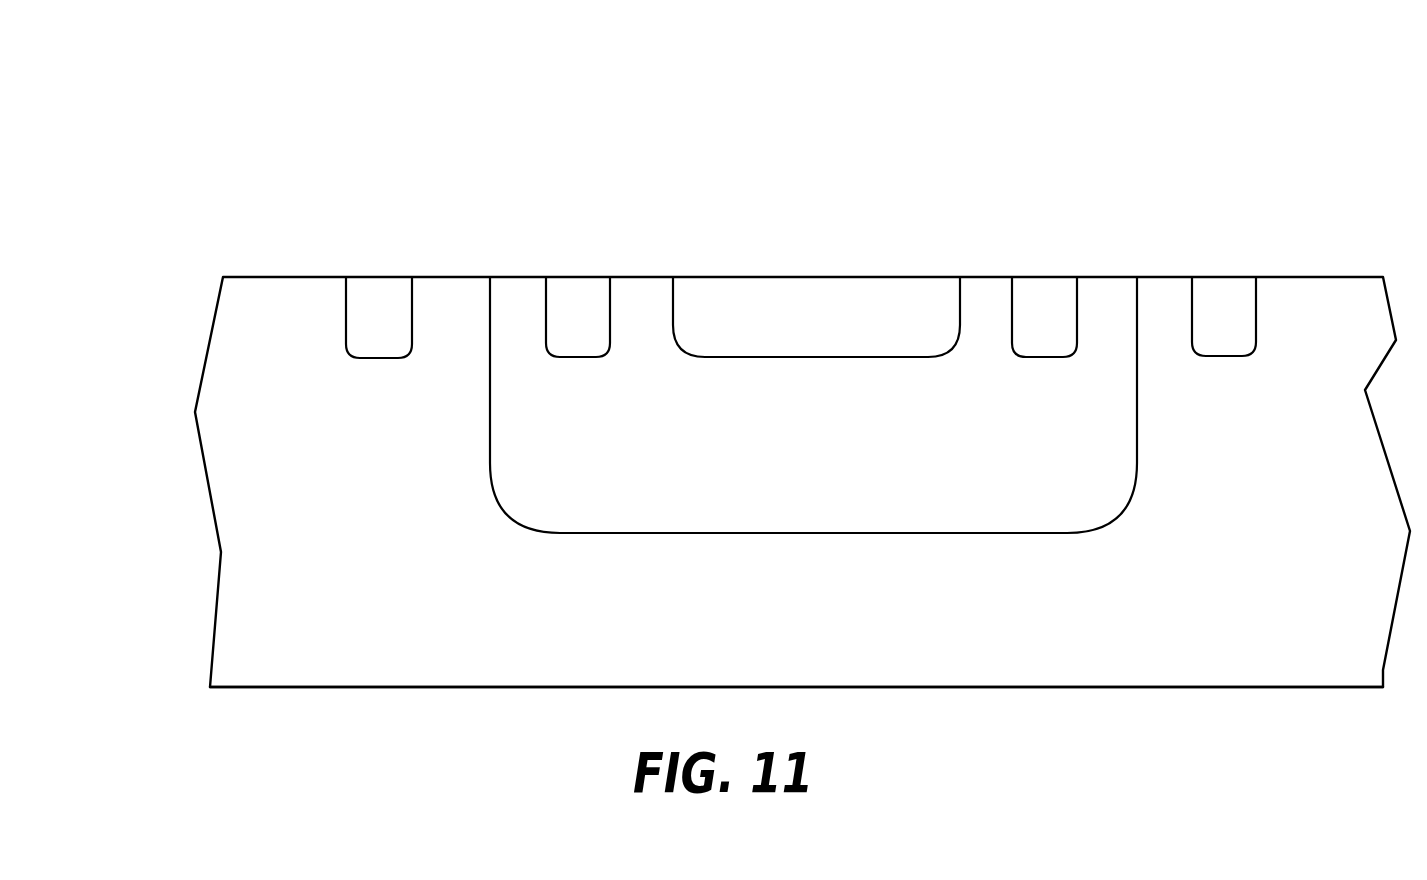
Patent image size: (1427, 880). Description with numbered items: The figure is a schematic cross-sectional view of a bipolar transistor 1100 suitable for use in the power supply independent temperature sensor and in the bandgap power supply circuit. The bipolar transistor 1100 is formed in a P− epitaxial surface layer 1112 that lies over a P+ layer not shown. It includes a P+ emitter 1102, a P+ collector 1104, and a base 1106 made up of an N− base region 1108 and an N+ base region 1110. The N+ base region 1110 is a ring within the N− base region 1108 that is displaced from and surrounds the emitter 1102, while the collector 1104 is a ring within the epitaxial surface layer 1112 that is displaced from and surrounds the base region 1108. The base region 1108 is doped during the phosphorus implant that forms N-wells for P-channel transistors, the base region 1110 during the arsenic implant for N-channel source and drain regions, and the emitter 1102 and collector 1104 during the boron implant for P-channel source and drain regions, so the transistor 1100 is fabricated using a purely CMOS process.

The bipolar transistor 1100 is at (300, 195).
The P+ emitter 1102 is at (815, 277).
The P+ collector 1104 is at (381, 277).
The base 1106 is at (560, 165).
The N− base region 1108 is at (1115, 508).
The N+ base region 1110 is at (577, 277).
The P− epitaxial surface layer 1112 is at (1153, 688).